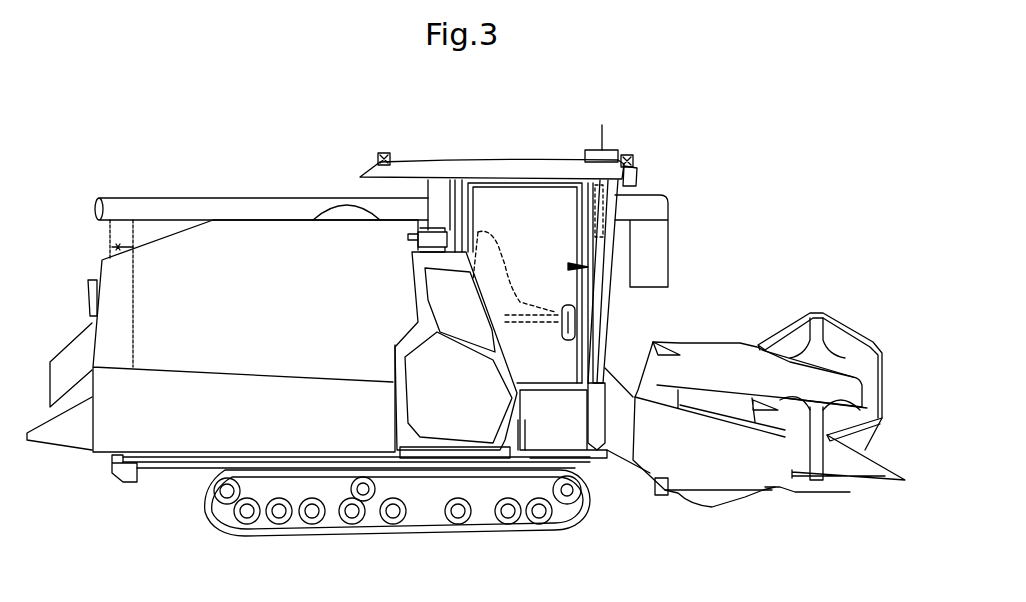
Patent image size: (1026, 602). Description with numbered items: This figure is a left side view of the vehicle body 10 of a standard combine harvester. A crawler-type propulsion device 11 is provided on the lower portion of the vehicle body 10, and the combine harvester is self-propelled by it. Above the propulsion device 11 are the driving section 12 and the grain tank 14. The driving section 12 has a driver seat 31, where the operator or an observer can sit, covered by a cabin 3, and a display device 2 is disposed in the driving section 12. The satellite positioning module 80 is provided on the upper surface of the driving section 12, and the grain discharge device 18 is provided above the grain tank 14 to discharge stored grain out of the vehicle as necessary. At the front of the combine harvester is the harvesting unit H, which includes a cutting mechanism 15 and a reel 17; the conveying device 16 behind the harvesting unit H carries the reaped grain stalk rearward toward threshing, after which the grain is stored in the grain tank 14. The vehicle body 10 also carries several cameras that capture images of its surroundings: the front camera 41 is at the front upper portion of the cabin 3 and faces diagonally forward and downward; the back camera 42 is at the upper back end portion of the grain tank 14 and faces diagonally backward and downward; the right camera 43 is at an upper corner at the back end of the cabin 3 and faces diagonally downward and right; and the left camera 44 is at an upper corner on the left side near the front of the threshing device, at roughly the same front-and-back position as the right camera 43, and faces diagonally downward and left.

The display device 2 is at (578, 207).
The cabin 3 is at (510, 166).
The vehicle body 10 is at (107, 485).
The propulsion device 11 is at (225, 508).
The driving section 12 is at (592, 266).
The grain tank 14 is at (183, 232).
The cutting mechanism 15 is at (845, 497).
The conveying device 16 is at (618, 385).
The reel 17 is at (872, 328).
The grain discharge device 18 is at (278, 212).
The driver seat 31 is at (506, 250).
The front camera 41 is at (627, 154).
The back camera 42 is at (108, 247).
The right camera 43 is at (384, 152).
The left camera 44 is at (412, 243).
The satellite positioning module 80 is at (598, 149).
The harvesting unit H is at (805, 296).